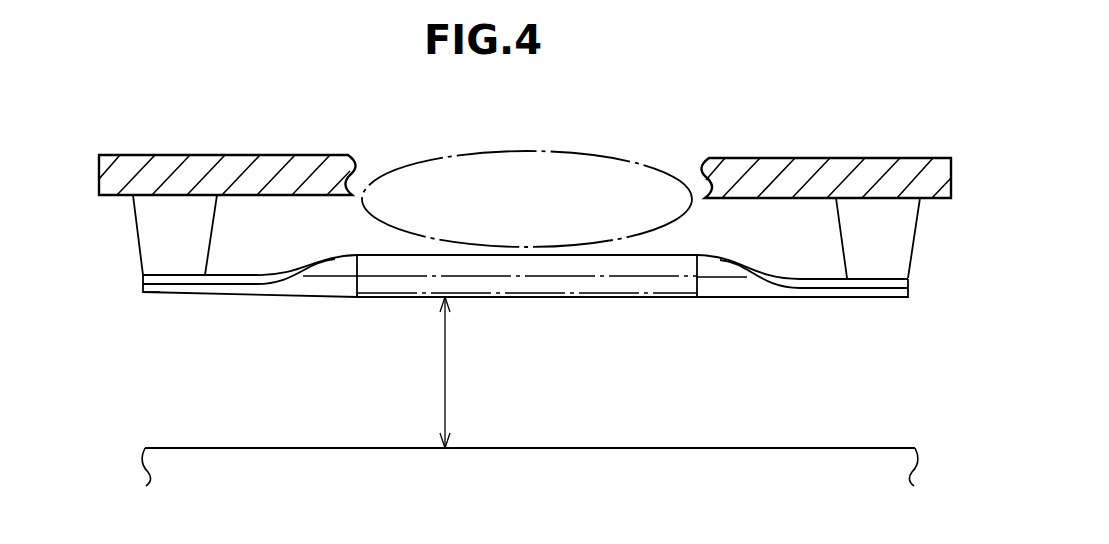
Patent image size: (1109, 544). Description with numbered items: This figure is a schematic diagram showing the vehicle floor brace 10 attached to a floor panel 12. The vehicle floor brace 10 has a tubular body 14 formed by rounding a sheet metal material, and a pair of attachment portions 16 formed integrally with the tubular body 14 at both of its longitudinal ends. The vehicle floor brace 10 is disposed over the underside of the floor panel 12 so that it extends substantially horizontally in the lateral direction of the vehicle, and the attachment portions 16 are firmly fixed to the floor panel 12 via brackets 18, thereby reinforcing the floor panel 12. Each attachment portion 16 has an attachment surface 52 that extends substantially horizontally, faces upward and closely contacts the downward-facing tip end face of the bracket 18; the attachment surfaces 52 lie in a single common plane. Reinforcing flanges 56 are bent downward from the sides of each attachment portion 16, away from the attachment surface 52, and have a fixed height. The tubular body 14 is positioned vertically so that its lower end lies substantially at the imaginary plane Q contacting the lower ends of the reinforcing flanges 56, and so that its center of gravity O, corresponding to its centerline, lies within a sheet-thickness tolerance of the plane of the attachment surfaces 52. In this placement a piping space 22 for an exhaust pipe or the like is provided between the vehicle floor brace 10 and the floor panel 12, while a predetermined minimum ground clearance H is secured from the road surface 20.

The vehicle floor brace 10 is at (393, 315).
The floor panel 12 is at (268, 172).
The tubular body 14 is at (530, 284).
The attachment portions 16 is at (175, 282).
The brackets 18 is at (167, 222).
The road surface 20 is at (555, 448).
The piping space 22 is at (532, 150).
The attachment surface 52 is at (192, 273).
The reinforcing flanges 56 is at (158, 290).
The minimum ground clearance H is at (434, 372).
The center of gravity of the tubular body O is at (719, 276).
The imaginary plane Q is at (673, 297).